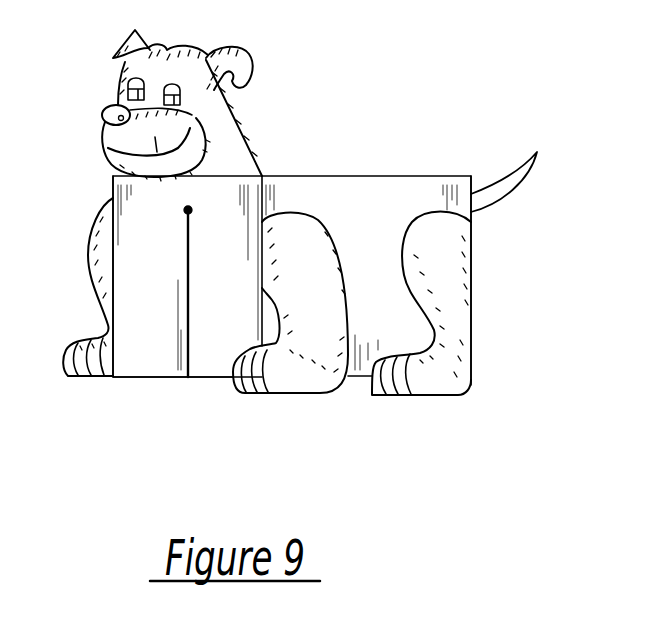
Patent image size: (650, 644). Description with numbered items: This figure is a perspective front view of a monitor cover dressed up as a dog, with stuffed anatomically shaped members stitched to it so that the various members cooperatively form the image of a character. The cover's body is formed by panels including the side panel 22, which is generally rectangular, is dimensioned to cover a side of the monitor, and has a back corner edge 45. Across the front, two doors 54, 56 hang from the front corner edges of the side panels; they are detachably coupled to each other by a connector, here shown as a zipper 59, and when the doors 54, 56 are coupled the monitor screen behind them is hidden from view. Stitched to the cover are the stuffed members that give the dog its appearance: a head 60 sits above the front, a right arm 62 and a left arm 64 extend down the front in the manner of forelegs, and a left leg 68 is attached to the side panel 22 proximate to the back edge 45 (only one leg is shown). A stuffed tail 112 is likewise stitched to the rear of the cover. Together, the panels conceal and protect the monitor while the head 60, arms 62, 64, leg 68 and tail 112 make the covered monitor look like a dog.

The side panel 22 is at (378, 237).
The back corner edge 45 is at (472, 238).
The door 54 is at (157, 269).
The door 56 is at (239, 274).
The zipper 59 is at (185, 343).
The head 60 is at (203, 51).
The right arm 62 is at (82, 338).
The left arm 64 is at (297, 377).
The left leg 68 is at (432, 380).
The tail 112 is at (505, 203).